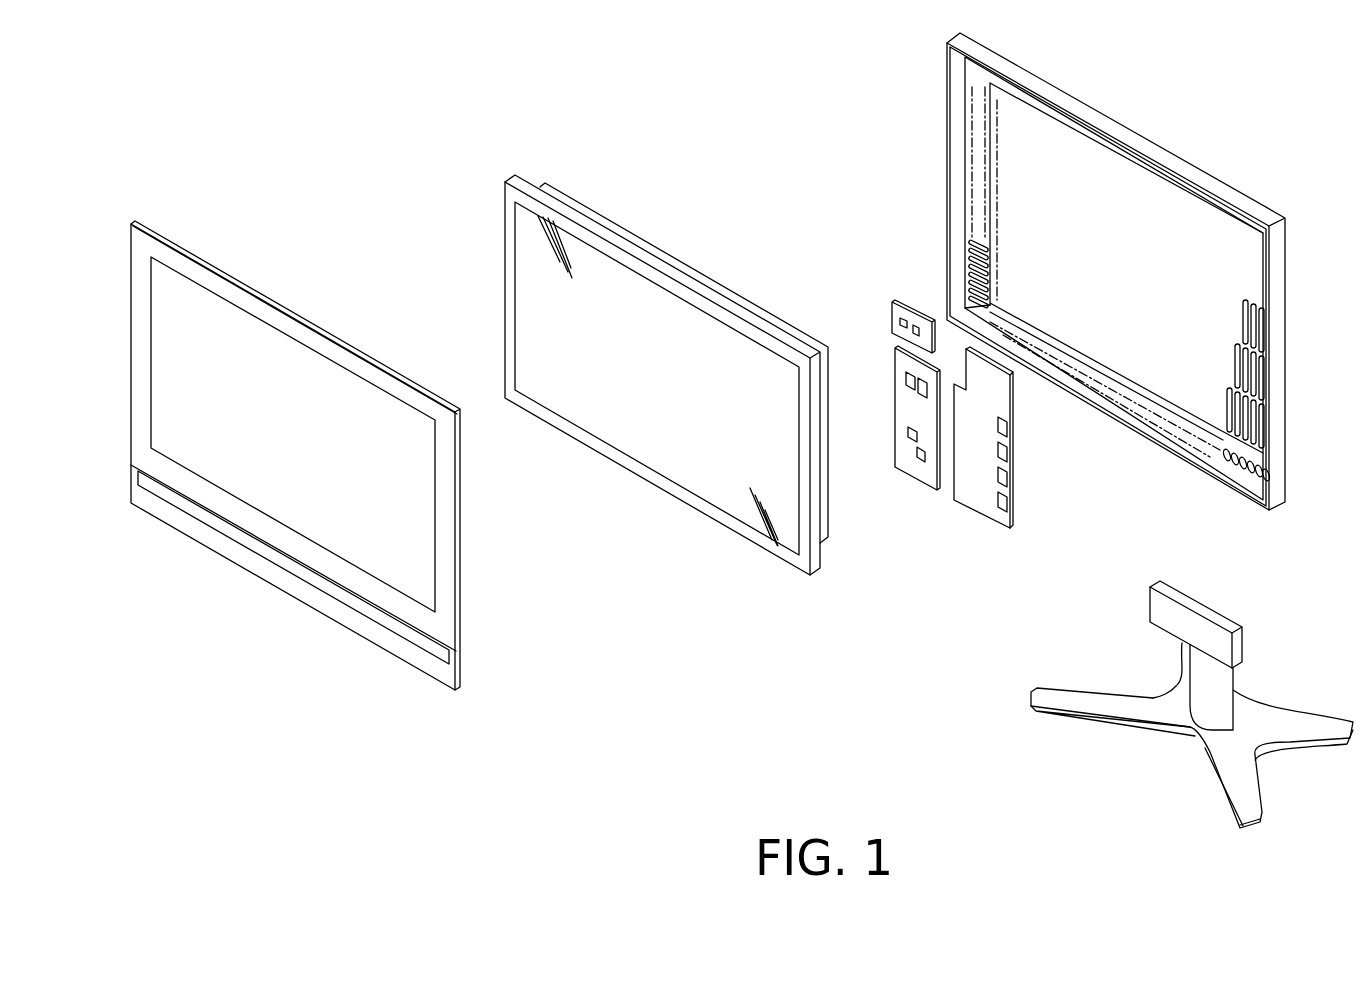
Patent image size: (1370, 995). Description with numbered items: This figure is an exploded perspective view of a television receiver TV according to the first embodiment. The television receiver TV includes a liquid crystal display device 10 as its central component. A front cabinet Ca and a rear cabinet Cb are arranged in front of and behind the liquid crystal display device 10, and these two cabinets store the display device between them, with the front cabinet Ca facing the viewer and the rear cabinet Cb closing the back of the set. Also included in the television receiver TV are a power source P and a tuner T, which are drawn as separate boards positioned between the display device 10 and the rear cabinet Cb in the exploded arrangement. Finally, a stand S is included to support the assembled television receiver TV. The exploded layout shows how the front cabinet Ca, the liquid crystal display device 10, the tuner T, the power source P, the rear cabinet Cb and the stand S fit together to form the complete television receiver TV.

The television receiver TV is at (692, 101).
The front cabinet Ca is at (279, 300).
The liquid crystal display device 10 is at (608, 222).
The rear cabinet Cb is at (1107, 117).
The tuner T is at (912, 477).
The power source P is at (977, 513).
The stand S is at (1107, 718).